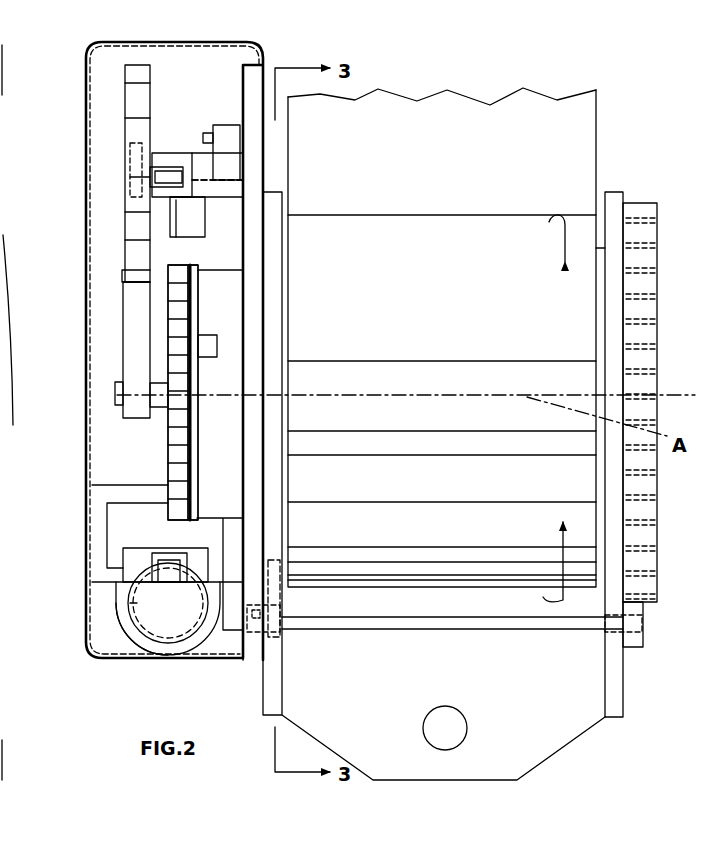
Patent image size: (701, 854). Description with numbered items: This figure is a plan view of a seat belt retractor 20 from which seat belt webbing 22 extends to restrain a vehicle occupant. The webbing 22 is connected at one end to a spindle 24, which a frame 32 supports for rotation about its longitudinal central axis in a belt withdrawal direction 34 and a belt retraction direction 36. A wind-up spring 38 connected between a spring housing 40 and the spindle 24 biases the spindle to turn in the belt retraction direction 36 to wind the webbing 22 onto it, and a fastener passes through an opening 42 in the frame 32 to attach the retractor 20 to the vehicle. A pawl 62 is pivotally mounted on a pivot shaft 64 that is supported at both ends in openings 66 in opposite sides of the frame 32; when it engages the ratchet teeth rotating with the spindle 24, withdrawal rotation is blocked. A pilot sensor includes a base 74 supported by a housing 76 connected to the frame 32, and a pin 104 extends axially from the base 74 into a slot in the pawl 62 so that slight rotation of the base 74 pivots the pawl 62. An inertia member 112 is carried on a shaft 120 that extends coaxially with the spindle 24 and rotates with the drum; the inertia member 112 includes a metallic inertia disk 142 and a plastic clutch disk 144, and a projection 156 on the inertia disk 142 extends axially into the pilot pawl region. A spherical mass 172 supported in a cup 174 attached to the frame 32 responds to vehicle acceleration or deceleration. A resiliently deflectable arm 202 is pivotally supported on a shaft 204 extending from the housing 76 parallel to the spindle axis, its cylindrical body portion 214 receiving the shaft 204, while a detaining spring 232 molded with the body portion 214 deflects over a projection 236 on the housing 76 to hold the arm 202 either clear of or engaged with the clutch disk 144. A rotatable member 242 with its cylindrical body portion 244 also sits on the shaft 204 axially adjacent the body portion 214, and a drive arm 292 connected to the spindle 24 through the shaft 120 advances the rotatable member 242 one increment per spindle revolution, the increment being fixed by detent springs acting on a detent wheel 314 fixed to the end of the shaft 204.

The seat belt retractor 20 is at (457, 68).
The seat belt webbing 22 is at (528, 140).
The spindle 24 is at (578, 373).
The frame 32 is at (308, 687).
The belt withdrawal direction 34 is at (565, 226).
The belt retraction direction 36 is at (560, 565).
The wind-up spring 38 is at (640, 220).
The spring housing 40 is at (657, 567).
The opening 42 is at (463, 735).
The pawl 62 is at (275, 593).
The pivot shaft 64 is at (380, 620).
The openings 66 is at (285, 622).
The base 74 is at (233, 588).
The housing 76 is at (253, 642).
The pin 104 is at (222, 607).
The inertia member 112 is at (183, 262).
The shaft 120 is at (160, 383).
The inertia disk 142 is at (197, 305).
The clutch disk 144 is at (190, 284).
The projection 156 is at (217, 343).
The spherical mass 172 is at (137, 603).
The cup 174 is at (133, 633).
The resiliently deflectable arm 202 is at (185, 222).
The shaft 204 is at (140, 172).
The cylindrical body portion 214 is at (205, 162).
The detaining spring 232 is at (230, 151).
The projection 236 is at (213, 138).
The rotatable member 242 is at (124, 70).
The cylindrical body portion 244 is at (173, 157).
The drive arm 292 is at (135, 330).
The detent wheel 314 is at (133, 150).